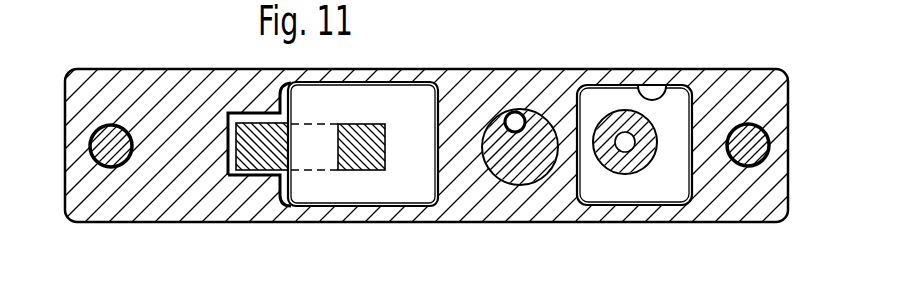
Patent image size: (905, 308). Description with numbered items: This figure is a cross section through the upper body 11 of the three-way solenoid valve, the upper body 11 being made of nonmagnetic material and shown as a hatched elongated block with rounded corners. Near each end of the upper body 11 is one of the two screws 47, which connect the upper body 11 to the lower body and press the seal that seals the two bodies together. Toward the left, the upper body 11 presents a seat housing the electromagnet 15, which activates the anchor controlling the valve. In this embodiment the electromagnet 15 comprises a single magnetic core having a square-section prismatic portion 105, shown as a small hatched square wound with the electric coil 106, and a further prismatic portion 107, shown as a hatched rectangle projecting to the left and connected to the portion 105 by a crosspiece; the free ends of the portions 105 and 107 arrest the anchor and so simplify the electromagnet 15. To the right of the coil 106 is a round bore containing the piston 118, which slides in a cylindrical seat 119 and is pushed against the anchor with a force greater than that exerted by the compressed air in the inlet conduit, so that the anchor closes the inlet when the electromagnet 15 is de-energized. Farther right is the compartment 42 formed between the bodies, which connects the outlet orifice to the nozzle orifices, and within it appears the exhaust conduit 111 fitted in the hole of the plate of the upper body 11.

The upper body 11 is at (180, 100).
The screws 47 is at (105, 150).
The electric coil 106 is at (420, 100).
The electromagnet 15 is at (295, 208).
The further prismatic portion 107 is at (260, 143).
The square-section prismatic portion 105 is at (367, 157).
The piston 118 is at (525, 167).
The cylindrical seat 119 is at (523, 128).
The compartment 42 is at (673, 87).
The exhaust conduit 111 is at (628, 152).